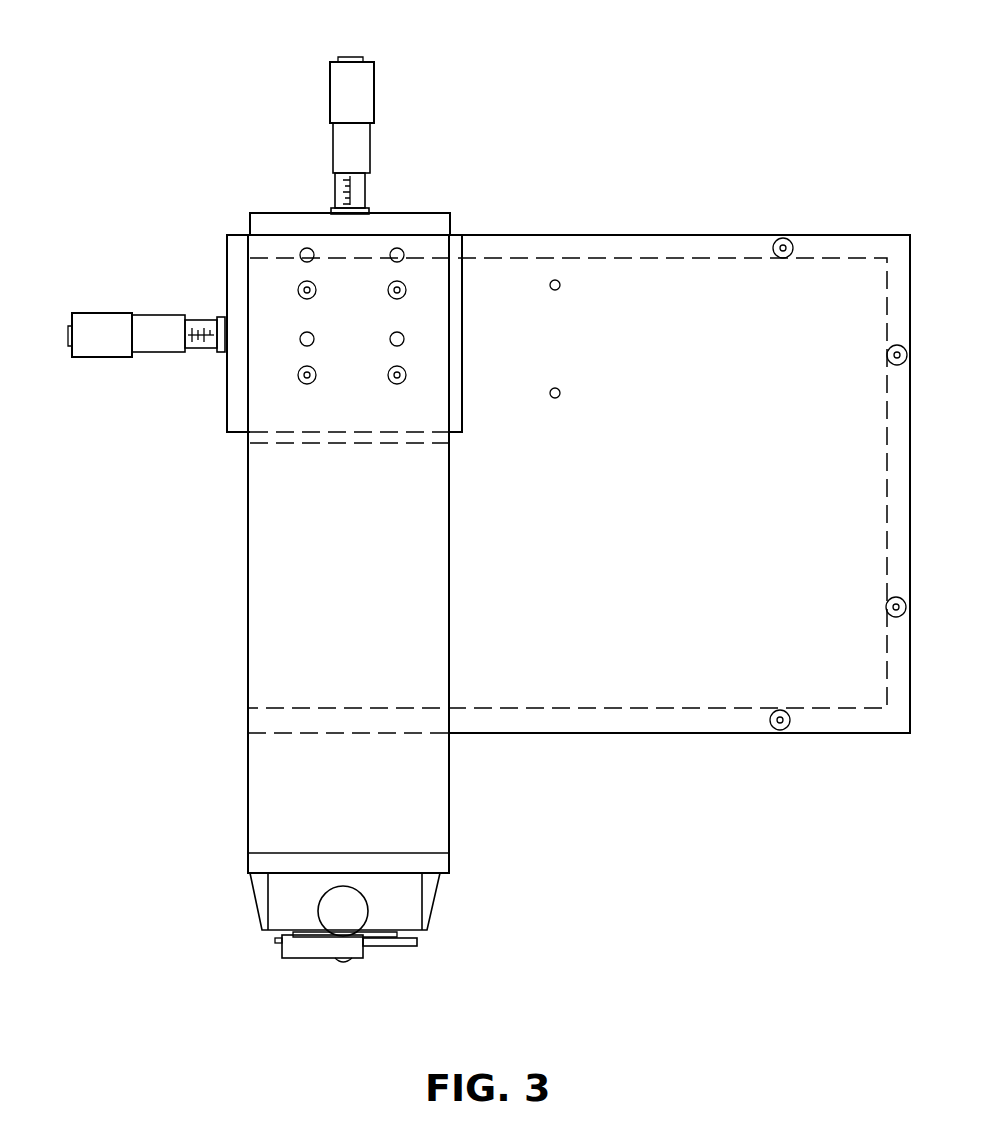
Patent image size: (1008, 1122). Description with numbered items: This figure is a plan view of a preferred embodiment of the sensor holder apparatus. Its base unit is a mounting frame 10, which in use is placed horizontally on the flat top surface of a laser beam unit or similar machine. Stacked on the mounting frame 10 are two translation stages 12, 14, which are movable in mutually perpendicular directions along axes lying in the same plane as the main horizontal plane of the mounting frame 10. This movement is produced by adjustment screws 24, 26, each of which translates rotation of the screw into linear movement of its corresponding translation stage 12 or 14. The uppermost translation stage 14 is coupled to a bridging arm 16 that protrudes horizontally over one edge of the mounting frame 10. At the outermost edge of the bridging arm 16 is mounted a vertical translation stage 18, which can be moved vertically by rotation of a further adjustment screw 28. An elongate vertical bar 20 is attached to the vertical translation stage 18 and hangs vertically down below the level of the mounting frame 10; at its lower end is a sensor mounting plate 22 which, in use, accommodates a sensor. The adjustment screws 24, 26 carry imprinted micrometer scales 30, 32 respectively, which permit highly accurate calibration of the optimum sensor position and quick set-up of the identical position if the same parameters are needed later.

The mounting frame 10 is at (607, 278).
The translation stage 12 is at (412, 222).
The translation stage 14 is at (235, 400).
The bridging arm 16 is at (263, 628).
The vertical translation stage 18 is at (408, 897).
The elongate vertical bar 20 is at (313, 948).
The sensor mounting plate 22 is at (397, 945).
The adjustment screw 24 is at (367, 93).
The adjustment screw 26 is at (107, 320).
The adjustment screw 28 is at (333, 910).
The micrometer scale 30 is at (337, 175).
The micrometer scale 32 is at (185, 320).